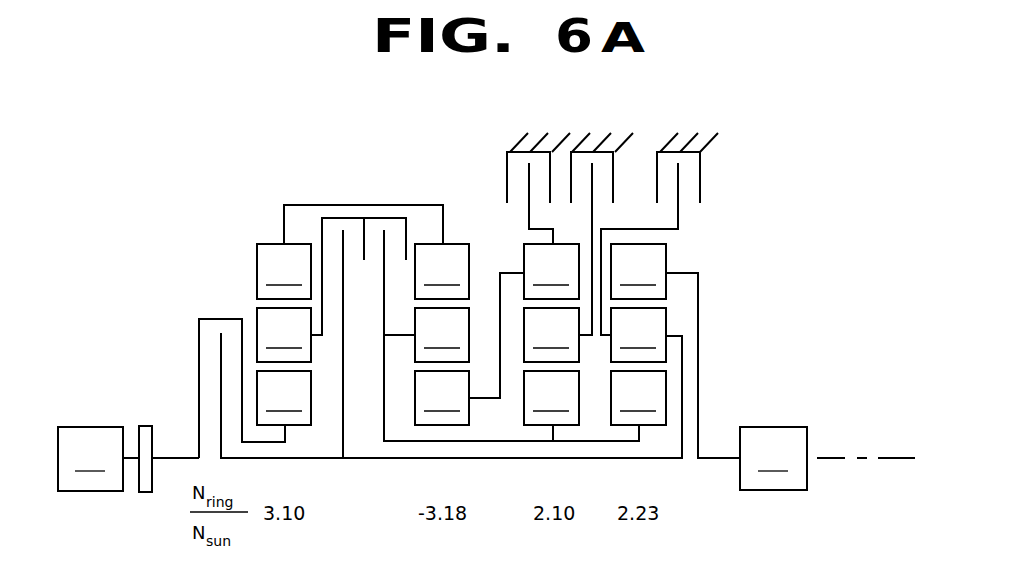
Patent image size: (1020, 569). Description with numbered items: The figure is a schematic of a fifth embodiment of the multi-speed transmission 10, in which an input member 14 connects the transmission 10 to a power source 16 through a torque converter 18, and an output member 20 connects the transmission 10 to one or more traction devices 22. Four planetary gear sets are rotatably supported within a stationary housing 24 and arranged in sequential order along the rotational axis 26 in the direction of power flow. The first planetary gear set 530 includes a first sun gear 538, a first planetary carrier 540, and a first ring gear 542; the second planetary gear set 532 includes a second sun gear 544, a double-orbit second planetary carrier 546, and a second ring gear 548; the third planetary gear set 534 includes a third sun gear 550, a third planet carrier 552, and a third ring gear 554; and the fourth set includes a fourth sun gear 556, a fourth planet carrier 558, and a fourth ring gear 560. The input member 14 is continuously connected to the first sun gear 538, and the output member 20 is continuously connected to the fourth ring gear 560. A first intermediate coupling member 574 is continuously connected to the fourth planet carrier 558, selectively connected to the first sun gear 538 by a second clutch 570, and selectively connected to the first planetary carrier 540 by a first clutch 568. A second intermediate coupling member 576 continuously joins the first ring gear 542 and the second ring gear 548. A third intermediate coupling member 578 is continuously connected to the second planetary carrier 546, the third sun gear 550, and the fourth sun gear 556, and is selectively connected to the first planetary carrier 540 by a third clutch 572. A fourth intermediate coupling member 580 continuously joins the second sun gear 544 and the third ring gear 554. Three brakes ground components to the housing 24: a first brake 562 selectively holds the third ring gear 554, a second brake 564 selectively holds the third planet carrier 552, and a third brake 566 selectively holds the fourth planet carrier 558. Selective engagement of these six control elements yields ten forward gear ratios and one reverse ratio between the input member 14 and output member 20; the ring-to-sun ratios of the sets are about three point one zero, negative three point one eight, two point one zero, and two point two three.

The multi-speed transmission 10 is at (238, 152).
The input member 14 is at (197, 457).
The power source 16 is at (90, 459).
The torque converter 18 is at (139, 428).
The output member 20 is at (718, 457).
The traction devices 22 is at (773, 458).
The stationary housing 24 is at (522, 134).
The rotational axis 26 is at (840, 457).
The first planetary gear set 530 is at (255, 312).
The second planetary gear set 532 is at (450, 302).
The third planetary gear set 534 is at (532, 315).
The first sun gear 538 is at (284, 398).
The first planetary carrier 540 is at (284, 335).
The first ring gear 542 is at (284, 271).
The second sun gear 544 is at (442, 398).
The second planetary carrier 546 is at (442, 335).
The second ring gear 548 is at (442, 271).
The third sun gear 550 is at (551, 398).
The third planet carrier 552 is at (551, 335).
The third ring gear 554 is at (551, 271).
The fourth sun gear 556 is at (638, 398).
The fourth planet carrier 558 is at (638, 335).
The fourth ring gear 560 is at (638, 271).
The first brake 562 is at (507, 163).
The second brake 564 is at (613, 165).
The third brake 566 is at (700, 172).
The first clutch 568 is at (332, 218).
The second clutch 570 is at (212, 319).
The third clutch 572 is at (380, 218).
The first intermediate coupling member 574 is at (337, 460).
The second intermediate coupling member 576 is at (402, 205).
The third intermediate coupling member 578 is at (384, 435).
The fourth intermediate coupling member 580 is at (478, 400).